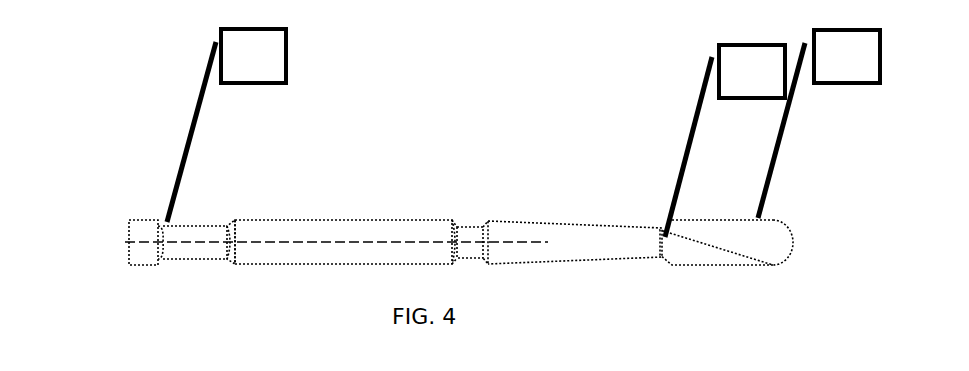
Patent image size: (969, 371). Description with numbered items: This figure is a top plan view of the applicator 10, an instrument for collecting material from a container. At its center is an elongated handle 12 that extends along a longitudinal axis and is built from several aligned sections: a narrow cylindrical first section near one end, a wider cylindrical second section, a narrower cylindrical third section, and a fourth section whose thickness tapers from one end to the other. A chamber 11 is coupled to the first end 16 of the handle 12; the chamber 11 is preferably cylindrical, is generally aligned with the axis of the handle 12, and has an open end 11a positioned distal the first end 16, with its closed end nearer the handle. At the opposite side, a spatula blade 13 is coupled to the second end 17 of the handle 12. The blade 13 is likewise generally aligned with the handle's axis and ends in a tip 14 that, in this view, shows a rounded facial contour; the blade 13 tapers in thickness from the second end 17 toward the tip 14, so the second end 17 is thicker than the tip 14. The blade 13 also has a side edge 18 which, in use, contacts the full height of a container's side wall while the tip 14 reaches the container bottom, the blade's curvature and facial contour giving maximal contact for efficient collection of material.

The applicator 10 is at (572, 107).
The chamber 11 is at (145, 232).
The open end 11a is at (129, 253).
The elongated handle 12 is at (377, 233).
The spatula blade 13 is at (725, 243).
The tip 14 is at (788, 227).
The first end 16 is at (226, 125).
The second end 17 is at (725, 141).
The side edge 18 is at (819, 124).